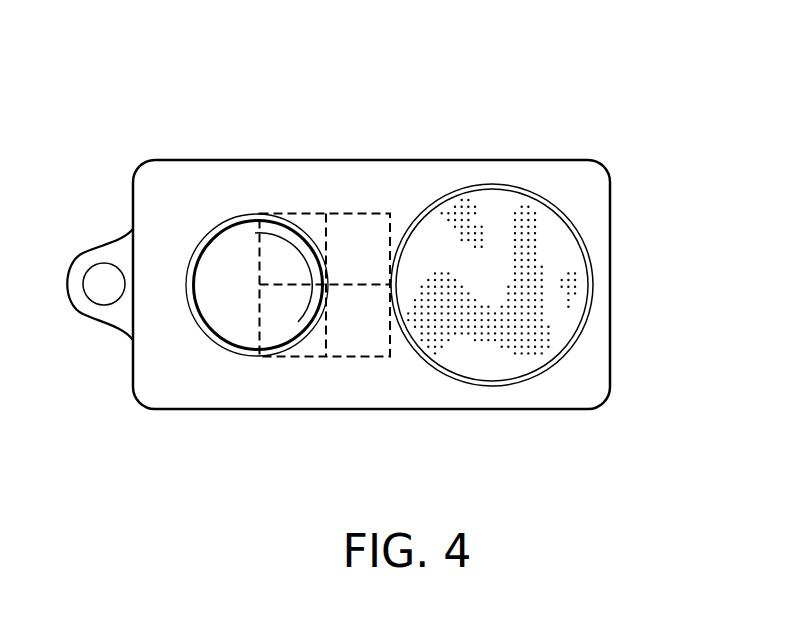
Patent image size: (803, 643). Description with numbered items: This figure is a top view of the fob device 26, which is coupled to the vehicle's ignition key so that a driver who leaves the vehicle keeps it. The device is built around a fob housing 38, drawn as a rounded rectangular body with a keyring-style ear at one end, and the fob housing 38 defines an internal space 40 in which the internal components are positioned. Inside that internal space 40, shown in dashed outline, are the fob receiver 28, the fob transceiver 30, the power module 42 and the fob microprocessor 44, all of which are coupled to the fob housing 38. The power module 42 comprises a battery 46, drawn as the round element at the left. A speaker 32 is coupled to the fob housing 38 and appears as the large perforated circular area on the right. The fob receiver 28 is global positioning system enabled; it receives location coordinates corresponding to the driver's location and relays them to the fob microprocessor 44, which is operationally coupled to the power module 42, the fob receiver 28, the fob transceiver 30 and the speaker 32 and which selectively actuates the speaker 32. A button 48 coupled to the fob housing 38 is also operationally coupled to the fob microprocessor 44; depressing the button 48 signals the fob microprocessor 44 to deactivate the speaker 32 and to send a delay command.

The fob device 26 is at (598, 114).
The fob receiver 28 is at (355, 237).
The fob transceiver 30 is at (355, 350).
The speaker 32 is at (545, 268).
The fob housing 38 is at (438, 160).
The internal space 40 is at (500, 243).
The power module 42 is at (305, 220).
The fob microprocessor 44 is at (303, 350).
The battery 46 is at (290, 220).
The button 48 is at (228, 303).